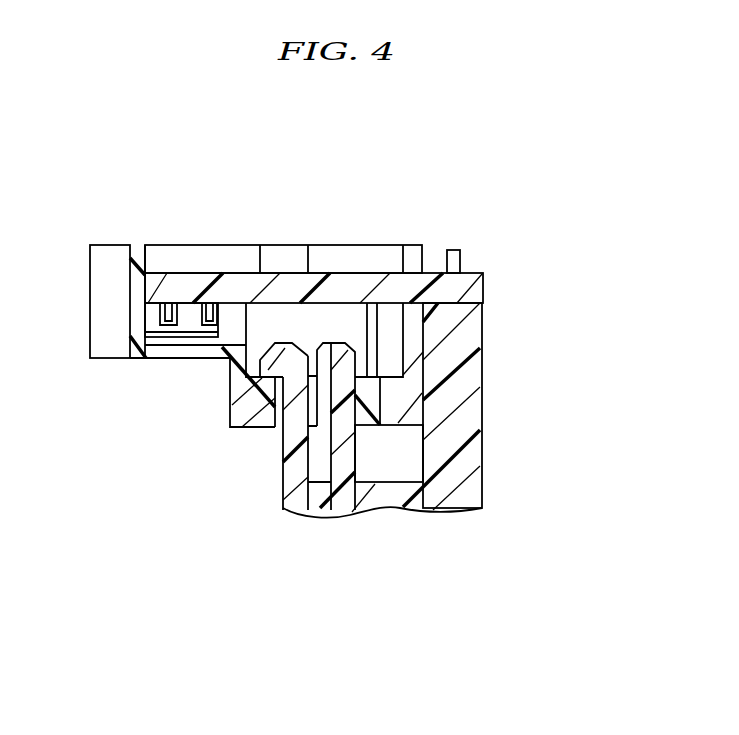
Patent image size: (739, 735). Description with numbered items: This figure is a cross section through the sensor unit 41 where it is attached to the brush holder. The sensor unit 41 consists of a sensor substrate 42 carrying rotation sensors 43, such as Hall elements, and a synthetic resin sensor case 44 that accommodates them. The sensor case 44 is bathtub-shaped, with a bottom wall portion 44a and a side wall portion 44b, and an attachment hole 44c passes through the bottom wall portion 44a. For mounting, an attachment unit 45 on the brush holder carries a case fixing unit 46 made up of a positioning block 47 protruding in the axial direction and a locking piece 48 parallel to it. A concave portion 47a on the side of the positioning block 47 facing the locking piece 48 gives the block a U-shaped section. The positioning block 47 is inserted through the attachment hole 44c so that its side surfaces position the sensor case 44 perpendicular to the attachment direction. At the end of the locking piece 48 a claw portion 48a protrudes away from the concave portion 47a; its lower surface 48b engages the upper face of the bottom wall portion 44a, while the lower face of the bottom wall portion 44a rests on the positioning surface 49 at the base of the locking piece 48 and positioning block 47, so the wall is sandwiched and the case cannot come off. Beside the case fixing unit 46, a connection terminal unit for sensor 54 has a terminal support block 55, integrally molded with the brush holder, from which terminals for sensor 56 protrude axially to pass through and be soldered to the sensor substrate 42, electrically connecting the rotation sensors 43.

The sensor unit 41 is at (510, 193).
The sensor substrate 42 is at (367, 268).
The rotation sensor 43 is at (185, 320).
The sensor case 44 is at (118, 243).
The bottom wall portion 44a is at (235, 382).
The side wall portion 44b is at (222, 258).
The attachment hole 44c is at (278, 410).
The attachment unit 45 is at (372, 525).
The case fixing unit 46 is at (368, 452).
The positioning block 47 is at (333, 371).
The concave portion 47a is at (325, 358).
The locking piece 48 is at (277, 374).
The claw portion 48a is at (280, 358).
The lower surface 48b is at (262, 403).
The positioning surface 49 is at (400, 418).
The connection terminal unit for sensor 54 is at (482, 323).
The terminal support block 55 is at (455, 432).
The terminal for sensor 56 is at (458, 260).